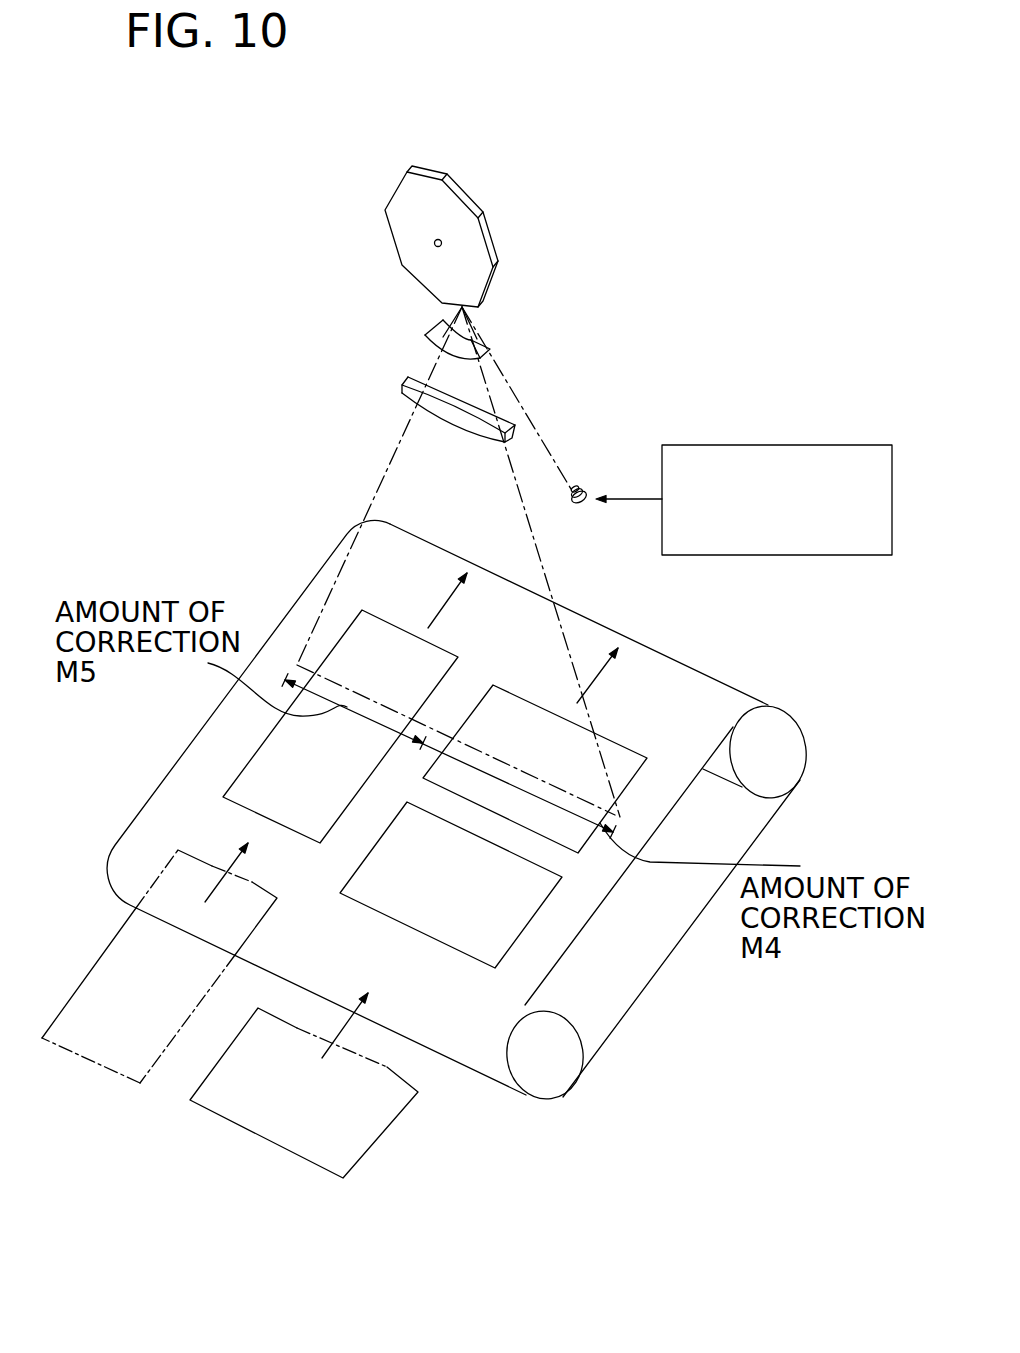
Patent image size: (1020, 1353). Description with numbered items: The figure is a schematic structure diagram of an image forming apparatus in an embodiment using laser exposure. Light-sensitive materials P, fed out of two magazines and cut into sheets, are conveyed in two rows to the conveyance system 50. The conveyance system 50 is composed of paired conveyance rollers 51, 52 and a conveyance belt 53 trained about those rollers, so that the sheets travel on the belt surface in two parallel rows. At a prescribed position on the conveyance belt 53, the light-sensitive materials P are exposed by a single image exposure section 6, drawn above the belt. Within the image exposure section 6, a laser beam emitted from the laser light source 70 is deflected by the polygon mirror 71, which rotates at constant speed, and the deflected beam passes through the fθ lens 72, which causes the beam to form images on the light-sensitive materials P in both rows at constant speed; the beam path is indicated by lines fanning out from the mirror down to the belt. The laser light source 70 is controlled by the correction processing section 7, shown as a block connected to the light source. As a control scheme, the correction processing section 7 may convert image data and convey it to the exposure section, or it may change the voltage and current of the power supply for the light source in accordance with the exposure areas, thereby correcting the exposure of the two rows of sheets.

The image exposure section 6 is at (418, 160).
The polygon mirror 71 is at (473, 235).
The fθ lens 72 is at (435, 332).
The laser light source 70 is at (580, 490).
The correction processing section 7 is at (757, 445).
The conveyance roller 52 is at (758, 720).
The conveyance roller 51 is at (538, 1087).
The conveyance belt 53 is at (563, 932).
The conveyance system 50 is at (689, 960).
The light-sensitive materials P is at (65, 1050).